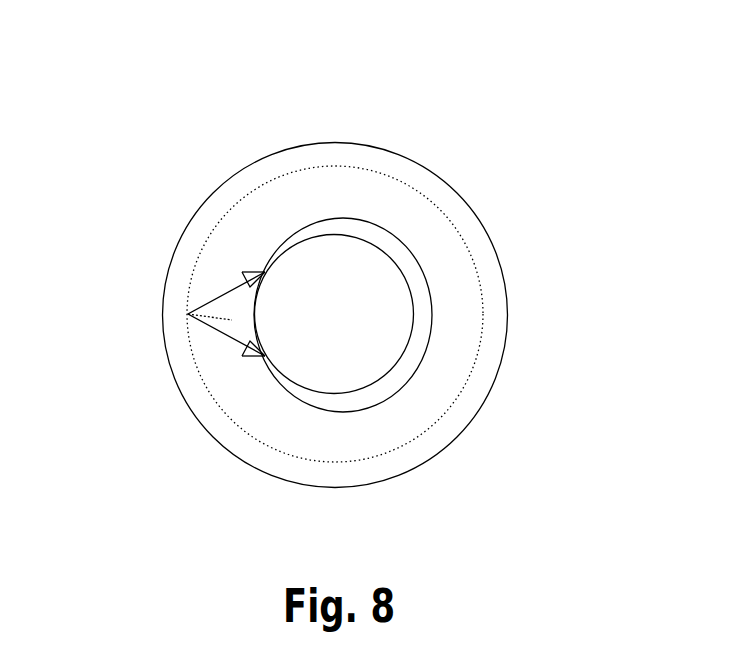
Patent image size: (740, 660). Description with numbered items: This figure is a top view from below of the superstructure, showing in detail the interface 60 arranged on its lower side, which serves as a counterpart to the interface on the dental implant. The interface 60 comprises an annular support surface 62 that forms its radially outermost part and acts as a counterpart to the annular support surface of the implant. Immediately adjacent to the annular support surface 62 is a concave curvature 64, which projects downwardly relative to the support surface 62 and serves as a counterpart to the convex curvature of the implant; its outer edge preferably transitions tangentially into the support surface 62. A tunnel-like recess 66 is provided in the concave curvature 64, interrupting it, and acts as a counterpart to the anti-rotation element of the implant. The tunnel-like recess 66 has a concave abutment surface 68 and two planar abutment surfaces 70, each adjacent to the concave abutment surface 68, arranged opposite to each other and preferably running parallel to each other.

The interface 60 is at (458, 156).
The annular support surface 62 is at (493, 347).
The concave curvature 64 is at (450, 290).
The tunnel-like recess 66 is at (188, 322).
The concave abutment surface 68 is at (223, 298).
The planar abutment surfaces 70 is at (240, 271).